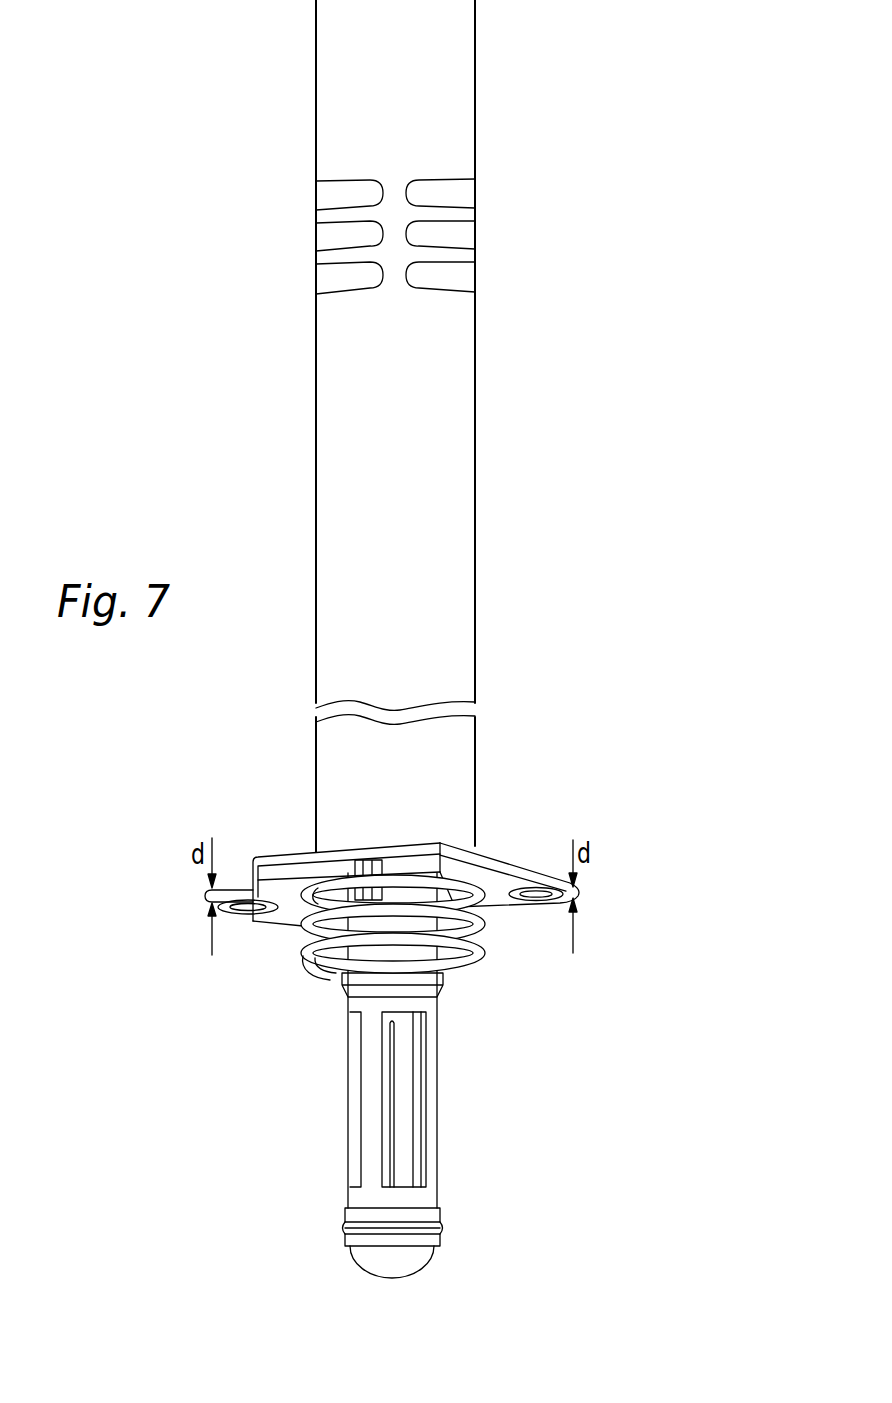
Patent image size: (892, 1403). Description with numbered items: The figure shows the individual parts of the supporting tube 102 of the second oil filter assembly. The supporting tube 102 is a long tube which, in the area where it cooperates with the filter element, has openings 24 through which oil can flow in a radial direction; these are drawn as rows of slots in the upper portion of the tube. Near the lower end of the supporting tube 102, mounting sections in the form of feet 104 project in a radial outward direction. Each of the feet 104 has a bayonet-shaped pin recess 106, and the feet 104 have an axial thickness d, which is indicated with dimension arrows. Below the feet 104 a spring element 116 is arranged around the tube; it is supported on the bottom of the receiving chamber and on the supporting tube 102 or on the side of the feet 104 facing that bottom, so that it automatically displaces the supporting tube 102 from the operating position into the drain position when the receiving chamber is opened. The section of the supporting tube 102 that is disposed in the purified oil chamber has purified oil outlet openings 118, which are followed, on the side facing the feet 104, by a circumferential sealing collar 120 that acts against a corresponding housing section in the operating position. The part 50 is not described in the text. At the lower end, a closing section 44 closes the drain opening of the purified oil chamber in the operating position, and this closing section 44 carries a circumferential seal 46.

The openings 24 is at (463, 197).
The supporting tube 102 is at (448, 387).
The feet 104 is at (235, 886).
The pin recesses 106 is at (262, 920).
The spring element 116 is at (330, 976).
The sealing collar 120 is at (445, 985).
The body 50 is at (438, 1013).
The purified oil outlet openings 118 is at (356, 1082).
The closing section 44 is at (440, 1216).
The circumferential seal 46 is at (440, 1228).